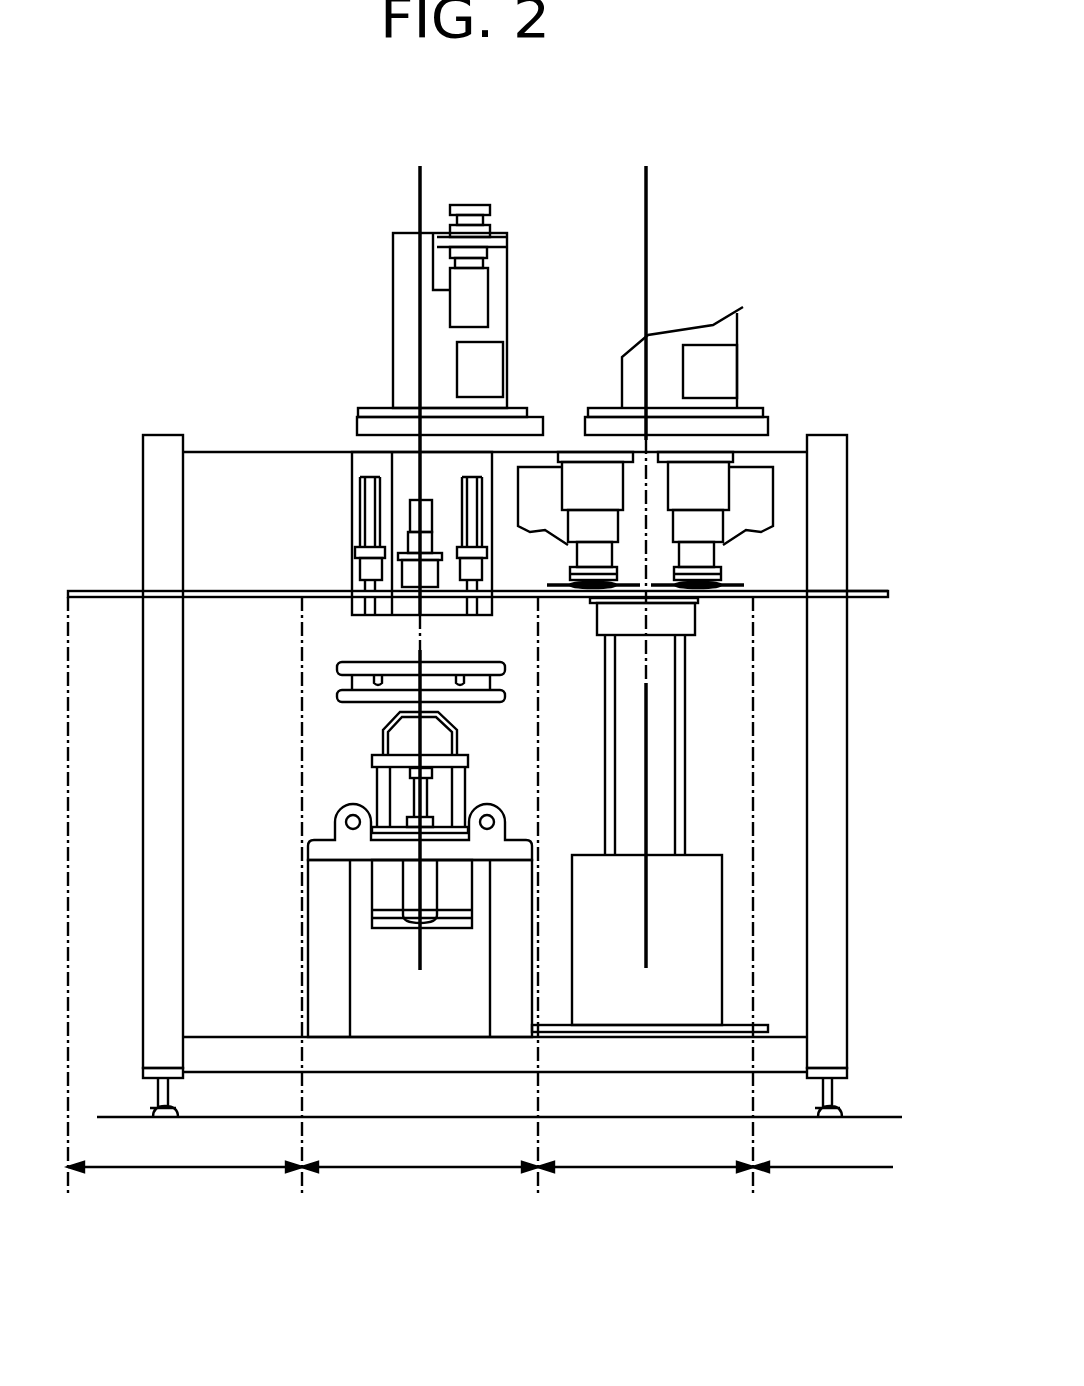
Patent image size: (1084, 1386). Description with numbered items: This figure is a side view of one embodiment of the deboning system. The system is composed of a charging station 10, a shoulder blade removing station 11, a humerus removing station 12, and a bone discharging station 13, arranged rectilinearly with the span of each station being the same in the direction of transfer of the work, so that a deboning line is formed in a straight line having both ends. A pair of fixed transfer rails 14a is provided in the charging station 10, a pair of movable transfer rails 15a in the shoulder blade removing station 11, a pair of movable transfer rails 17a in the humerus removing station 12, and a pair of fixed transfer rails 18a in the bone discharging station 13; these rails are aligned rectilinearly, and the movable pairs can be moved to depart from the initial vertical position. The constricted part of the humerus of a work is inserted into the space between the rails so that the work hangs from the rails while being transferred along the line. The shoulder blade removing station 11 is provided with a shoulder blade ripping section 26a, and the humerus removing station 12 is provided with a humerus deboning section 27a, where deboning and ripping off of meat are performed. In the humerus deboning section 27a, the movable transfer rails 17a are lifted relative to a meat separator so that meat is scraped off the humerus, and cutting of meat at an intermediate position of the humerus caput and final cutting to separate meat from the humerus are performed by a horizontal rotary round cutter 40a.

The charging station 10 is at (185, 1216).
The shoulder blade removing station 11 is at (417, 1216).
The humerus removing station 12 is at (645, 1215).
The bone discharging station 13 is at (856, 1215).
The fixed transfer rails 14a is at (93, 588).
The movable transfer rails 15a is at (340, 590).
The movable transfer rails 17a is at (700, 598).
The fixed transfer rails 18a is at (780, 598).
The shoulder blade ripping section 26a is at (273, 795).
The humerus deboning section 27a is at (750, 733).
The horizontal rotary round cutter 40a is at (558, 582).